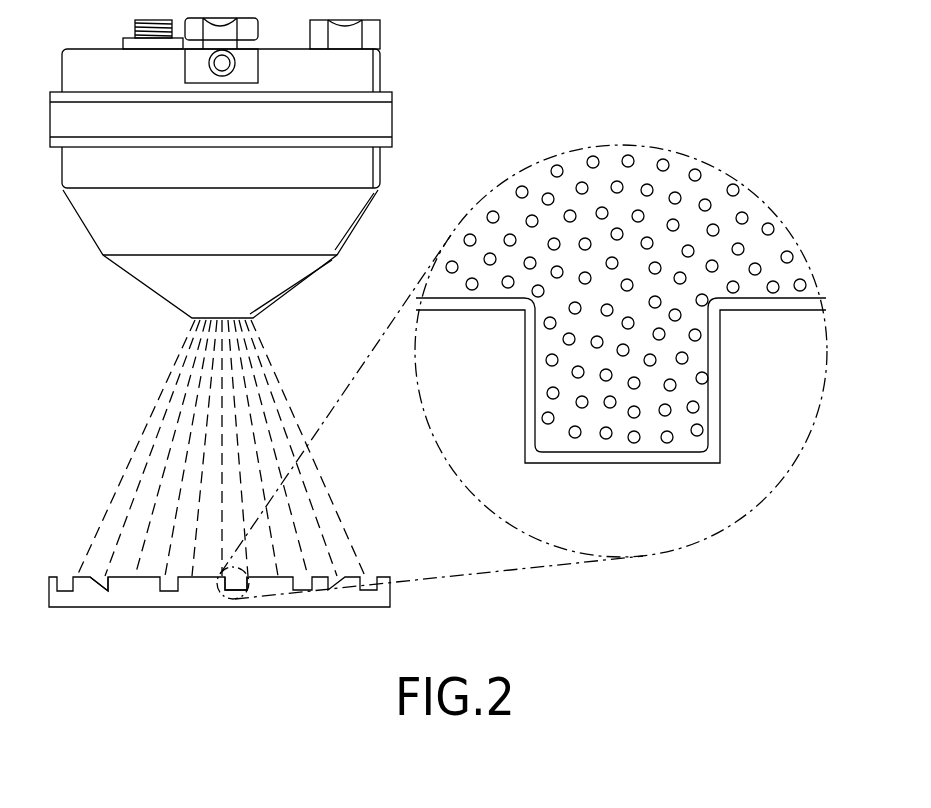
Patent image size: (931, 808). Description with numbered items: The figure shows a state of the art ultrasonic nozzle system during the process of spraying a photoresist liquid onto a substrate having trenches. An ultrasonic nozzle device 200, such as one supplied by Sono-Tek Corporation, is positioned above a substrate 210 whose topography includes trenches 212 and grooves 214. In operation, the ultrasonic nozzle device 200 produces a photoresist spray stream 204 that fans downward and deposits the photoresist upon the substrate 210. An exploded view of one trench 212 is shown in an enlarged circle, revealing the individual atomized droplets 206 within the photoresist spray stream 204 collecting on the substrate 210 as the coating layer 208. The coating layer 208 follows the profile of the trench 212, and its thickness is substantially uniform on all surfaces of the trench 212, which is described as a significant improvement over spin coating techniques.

The ultrasonic nozzle device 200 is at (380, 167).
The photoresist spray stream 204 is at (178, 413).
The atomized droplets 206 is at (742, 212).
The coating layer 208 is at (783, 297).
The substrate 210 is at (208, 595).
The trench 212 is at (165, 588).
The groove 214 is at (95, 587).